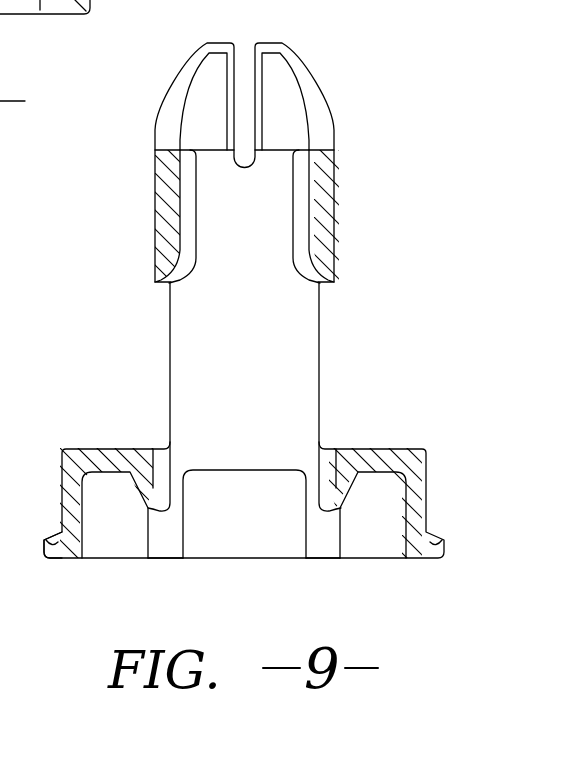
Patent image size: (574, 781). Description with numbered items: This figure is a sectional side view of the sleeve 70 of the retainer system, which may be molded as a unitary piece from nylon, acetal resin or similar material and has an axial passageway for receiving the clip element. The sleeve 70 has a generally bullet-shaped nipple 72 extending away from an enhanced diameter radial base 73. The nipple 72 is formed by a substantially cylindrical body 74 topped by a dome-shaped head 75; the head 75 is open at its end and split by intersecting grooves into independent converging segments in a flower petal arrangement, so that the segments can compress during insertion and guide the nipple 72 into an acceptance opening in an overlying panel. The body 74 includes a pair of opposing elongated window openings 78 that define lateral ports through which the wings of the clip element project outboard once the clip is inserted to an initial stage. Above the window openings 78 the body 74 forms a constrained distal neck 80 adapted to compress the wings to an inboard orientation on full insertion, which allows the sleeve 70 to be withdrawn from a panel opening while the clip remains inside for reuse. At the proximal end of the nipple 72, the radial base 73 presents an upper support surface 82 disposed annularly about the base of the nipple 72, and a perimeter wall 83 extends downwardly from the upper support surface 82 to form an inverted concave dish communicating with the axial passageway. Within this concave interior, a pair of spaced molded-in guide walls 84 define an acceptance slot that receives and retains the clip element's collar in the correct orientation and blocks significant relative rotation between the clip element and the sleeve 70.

The sleeve 70 is at (363, 83).
The nipple 72 is at (334, 190).
The radial base 73 is at (427, 493).
The body 74 is at (155, 197).
The head 75 is at (172, 88).
The window openings 78 is at (118, 282).
The distal neck 80 is at (190, 212).
The upper support surface 82 is at (398, 445).
The perimeter wall 83 is at (62, 513).
The guide walls 84 is at (322, 537).